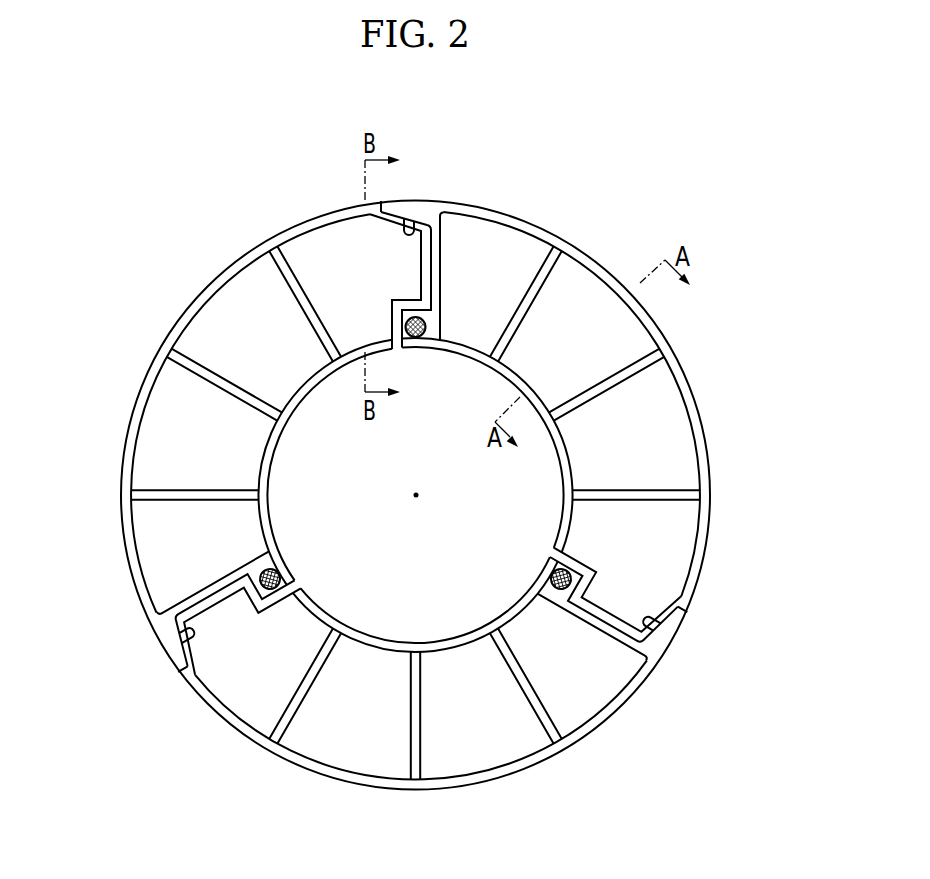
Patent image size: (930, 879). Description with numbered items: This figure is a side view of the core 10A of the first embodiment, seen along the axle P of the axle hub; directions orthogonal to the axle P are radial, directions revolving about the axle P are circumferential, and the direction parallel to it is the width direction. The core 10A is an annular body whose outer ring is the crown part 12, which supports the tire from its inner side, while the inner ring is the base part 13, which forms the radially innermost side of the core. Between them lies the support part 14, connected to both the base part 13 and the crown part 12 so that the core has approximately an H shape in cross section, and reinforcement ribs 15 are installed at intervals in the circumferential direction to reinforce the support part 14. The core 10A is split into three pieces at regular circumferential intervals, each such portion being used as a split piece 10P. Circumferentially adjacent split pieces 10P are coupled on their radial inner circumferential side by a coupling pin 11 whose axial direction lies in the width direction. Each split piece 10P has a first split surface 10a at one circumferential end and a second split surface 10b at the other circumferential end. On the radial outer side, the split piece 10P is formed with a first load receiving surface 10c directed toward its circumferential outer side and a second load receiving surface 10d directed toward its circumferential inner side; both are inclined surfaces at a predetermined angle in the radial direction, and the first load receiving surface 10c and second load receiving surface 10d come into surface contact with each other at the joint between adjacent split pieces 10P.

The split piece 10P is at (158, 352).
The core 10A is at (518, 200).
The first split surface 10a is at (448, 234).
The second split surface 10b is at (412, 262).
The first load receiving surface 10c is at (404, 222).
The second load receiving surface 10d is at (416, 227).
The coupling pin 11 is at (418, 338).
The crown part 12 is at (250, 258).
The base part 13 is at (303, 398).
The support part 14 is at (183, 452).
The reinforcement rib 15 is at (214, 384).
The axle P is at (421, 496).